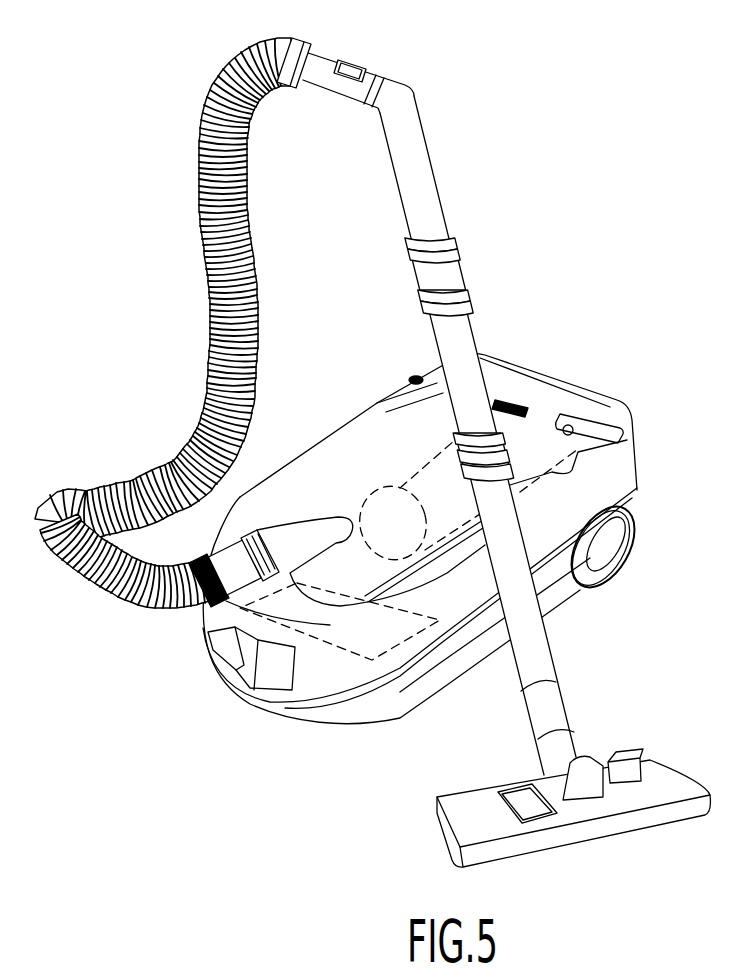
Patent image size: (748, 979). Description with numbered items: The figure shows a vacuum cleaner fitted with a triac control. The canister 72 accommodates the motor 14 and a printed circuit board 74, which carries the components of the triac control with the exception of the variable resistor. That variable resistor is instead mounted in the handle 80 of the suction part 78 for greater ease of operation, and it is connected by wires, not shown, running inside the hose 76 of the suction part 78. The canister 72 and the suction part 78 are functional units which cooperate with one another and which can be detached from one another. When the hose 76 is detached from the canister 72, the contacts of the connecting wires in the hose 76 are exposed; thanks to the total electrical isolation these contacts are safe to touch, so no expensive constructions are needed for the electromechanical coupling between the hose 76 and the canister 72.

The motor 14 is at (405, 474).
The canister 72 is at (310, 477).
The printed circuit board 74 is at (360, 660).
The hose 76 is at (212, 303).
The suction part 78 is at (452, 276).
The handle 80 is at (360, 68).